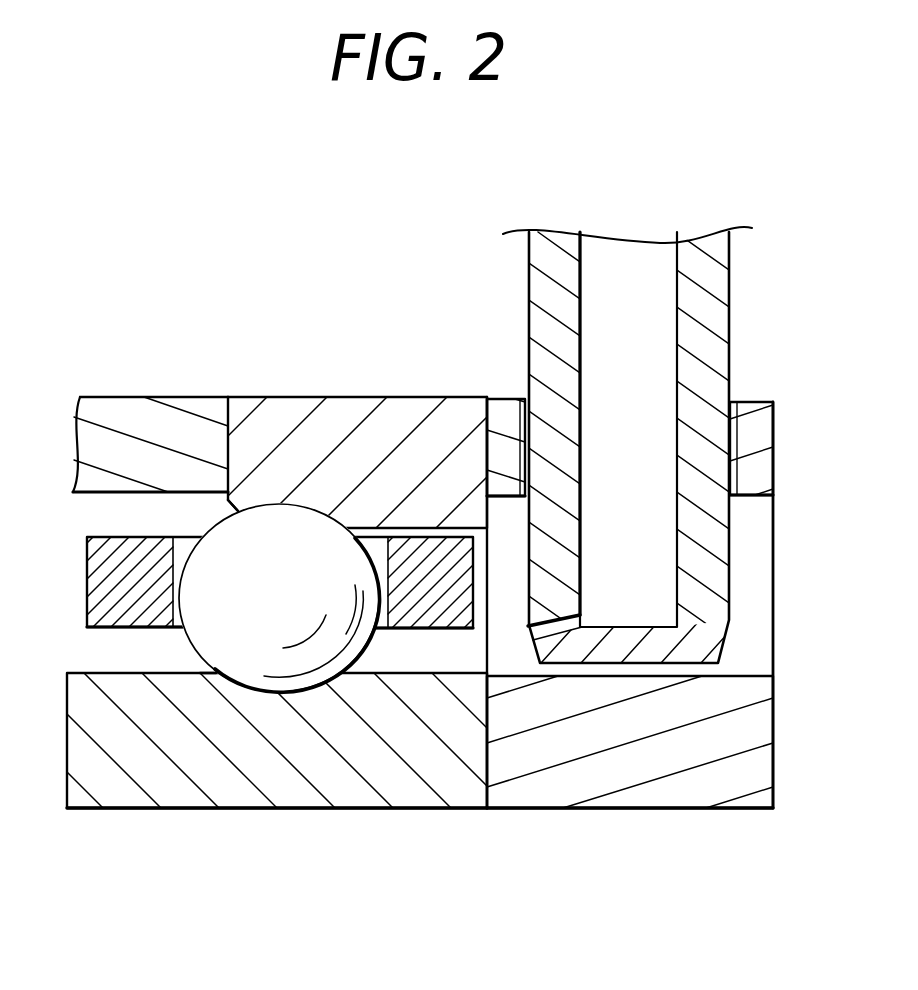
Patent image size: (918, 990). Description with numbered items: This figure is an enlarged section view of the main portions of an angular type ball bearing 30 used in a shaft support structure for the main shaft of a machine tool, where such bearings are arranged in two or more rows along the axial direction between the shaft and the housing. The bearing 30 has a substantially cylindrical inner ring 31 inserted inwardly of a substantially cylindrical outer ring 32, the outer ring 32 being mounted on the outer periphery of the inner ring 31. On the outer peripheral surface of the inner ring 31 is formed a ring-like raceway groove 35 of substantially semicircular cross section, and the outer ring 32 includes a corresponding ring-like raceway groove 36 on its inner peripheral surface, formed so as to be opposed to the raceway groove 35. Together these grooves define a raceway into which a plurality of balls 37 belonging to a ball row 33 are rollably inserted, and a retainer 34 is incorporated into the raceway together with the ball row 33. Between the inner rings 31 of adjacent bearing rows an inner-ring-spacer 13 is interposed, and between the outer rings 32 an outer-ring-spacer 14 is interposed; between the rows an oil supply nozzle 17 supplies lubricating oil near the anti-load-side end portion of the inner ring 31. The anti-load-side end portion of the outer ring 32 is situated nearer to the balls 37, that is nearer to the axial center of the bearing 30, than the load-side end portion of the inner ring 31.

The inner-ring-spacer 13 is at (642, 798).
The outer-ring-spacer 14 is at (140, 407).
The oil supply nozzle 17 is at (719, 298).
The angular type ball bearing 30 is at (253, 584).
The inner ring 31 is at (296, 797).
The outer ring 32 is at (432, 398).
The ball row 33 is at (297, 478).
The retainer 34 is at (103, 579).
The raceway groove 35 is at (293, 692).
The raceway groove 36 is at (294, 508).
The ball 37 is at (244, 673).